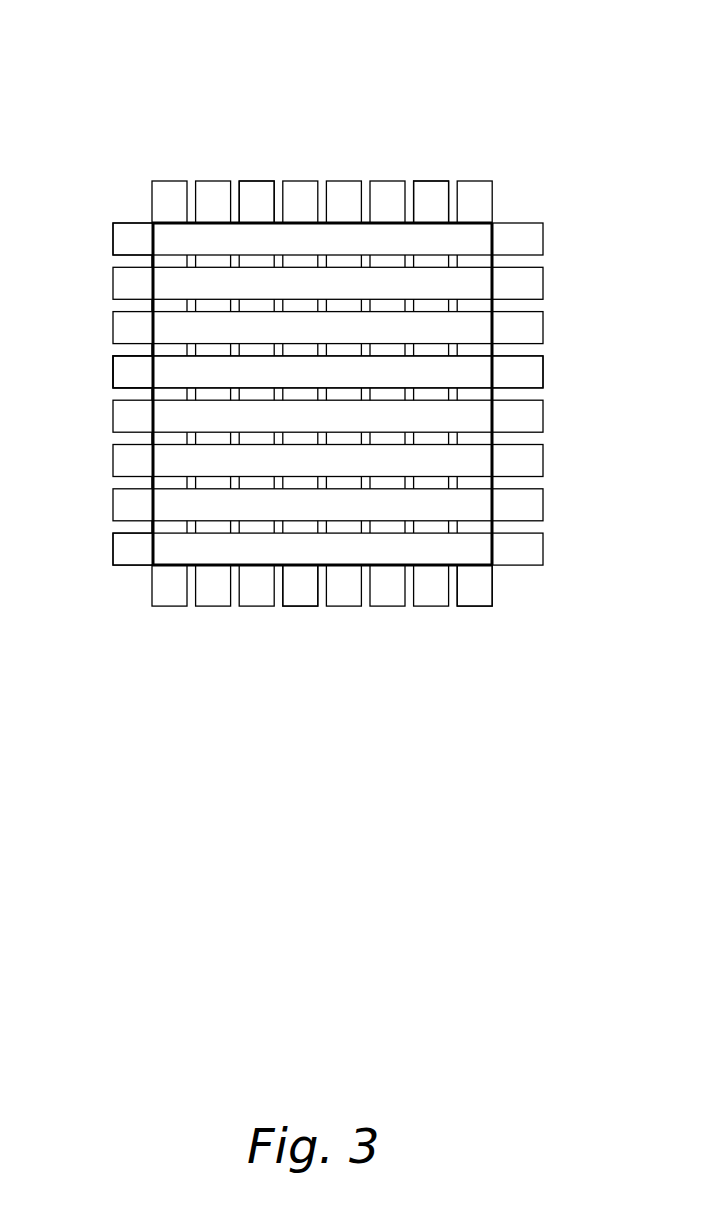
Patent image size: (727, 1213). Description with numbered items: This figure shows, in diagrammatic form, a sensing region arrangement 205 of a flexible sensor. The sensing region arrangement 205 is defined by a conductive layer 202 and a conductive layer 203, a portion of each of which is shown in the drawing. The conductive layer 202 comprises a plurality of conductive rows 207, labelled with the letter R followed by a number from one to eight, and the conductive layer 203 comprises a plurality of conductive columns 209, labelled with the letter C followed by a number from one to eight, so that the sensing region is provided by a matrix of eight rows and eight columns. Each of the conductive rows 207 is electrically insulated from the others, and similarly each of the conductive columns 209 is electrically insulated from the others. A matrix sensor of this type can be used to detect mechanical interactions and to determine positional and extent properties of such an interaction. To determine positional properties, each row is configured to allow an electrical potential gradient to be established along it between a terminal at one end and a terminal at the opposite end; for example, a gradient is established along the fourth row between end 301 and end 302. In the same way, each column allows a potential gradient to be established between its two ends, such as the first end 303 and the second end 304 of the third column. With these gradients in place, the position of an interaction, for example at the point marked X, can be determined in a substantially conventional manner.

The sensing region arrangement 205 is at (335, 337).
The conductive layer 202 is at (130, 229).
The conductive rows 207 is at (132, 565).
The end 302 is at (113, 373).
The end 301 is at (483, 370).
The first end 303 is at (250, 190).
The conductive layer 203 is at (430, 190).
The second end 304 is at (302, 594).
The conductive columns 209 is at (475, 599).